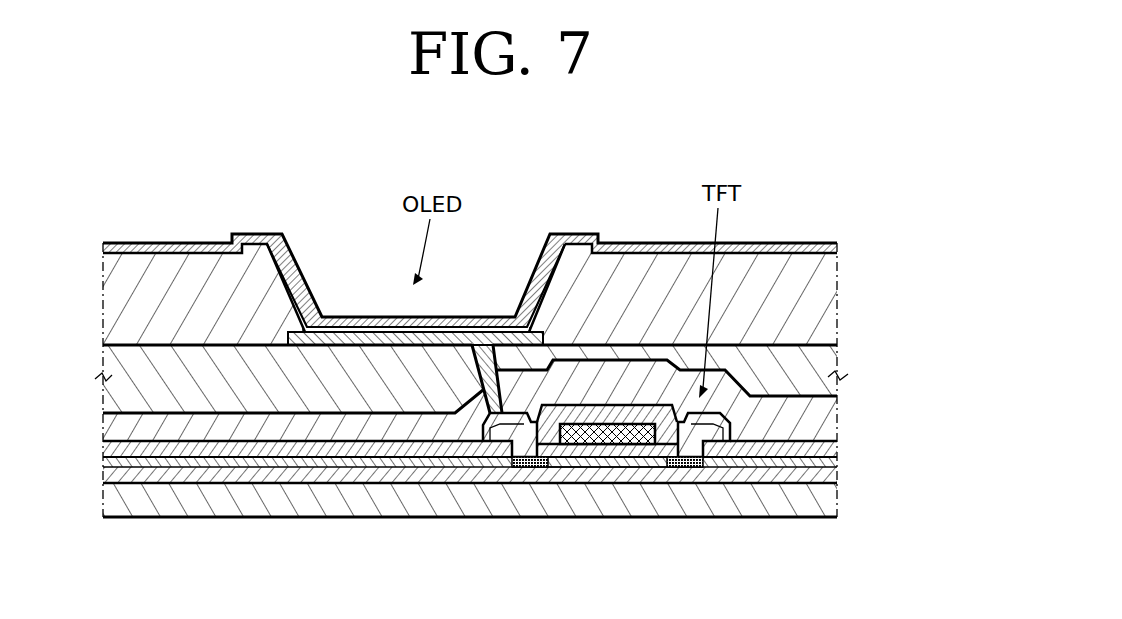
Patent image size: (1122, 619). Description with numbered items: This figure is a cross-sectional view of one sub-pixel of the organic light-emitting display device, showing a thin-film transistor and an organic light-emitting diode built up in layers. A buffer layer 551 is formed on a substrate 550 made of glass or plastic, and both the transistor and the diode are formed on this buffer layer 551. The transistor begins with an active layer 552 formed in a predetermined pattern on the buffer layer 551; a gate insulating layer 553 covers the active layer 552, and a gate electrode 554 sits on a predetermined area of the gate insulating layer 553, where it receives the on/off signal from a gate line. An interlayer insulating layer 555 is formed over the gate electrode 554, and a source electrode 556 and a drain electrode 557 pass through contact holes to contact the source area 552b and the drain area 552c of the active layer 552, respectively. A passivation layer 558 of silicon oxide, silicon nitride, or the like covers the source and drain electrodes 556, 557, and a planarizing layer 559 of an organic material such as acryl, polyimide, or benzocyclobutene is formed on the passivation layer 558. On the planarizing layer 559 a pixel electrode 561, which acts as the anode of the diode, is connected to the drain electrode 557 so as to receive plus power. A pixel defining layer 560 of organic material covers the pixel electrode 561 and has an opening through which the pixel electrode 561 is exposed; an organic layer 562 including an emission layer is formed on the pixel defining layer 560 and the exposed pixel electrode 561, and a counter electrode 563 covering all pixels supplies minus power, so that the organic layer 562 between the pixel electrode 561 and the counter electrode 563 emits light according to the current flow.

The substrate 550 is at (832, 512).
The buffer layer 551 is at (832, 483).
The active layer 552 is at (712, 466).
The source area 552b is at (706, 466).
The drain area 552c is at (513, 464).
The gate insulating layer 553 is at (833, 462).
The gate electrode 554 is at (601, 447).
The interlayer insulating layer 555 is at (832, 440).
The source electrode 556 is at (686, 447).
The drain electrode 557 is at (530, 447).
The passivation layer 558 is at (829, 410).
The planarizing layer 559 is at (828, 360).
The pixel defining layer 560 is at (835, 305).
The pixel electrode 561 is at (348, 318).
The organic layer 562 is at (458, 332).
The counter electrode 563 is at (262, 235).